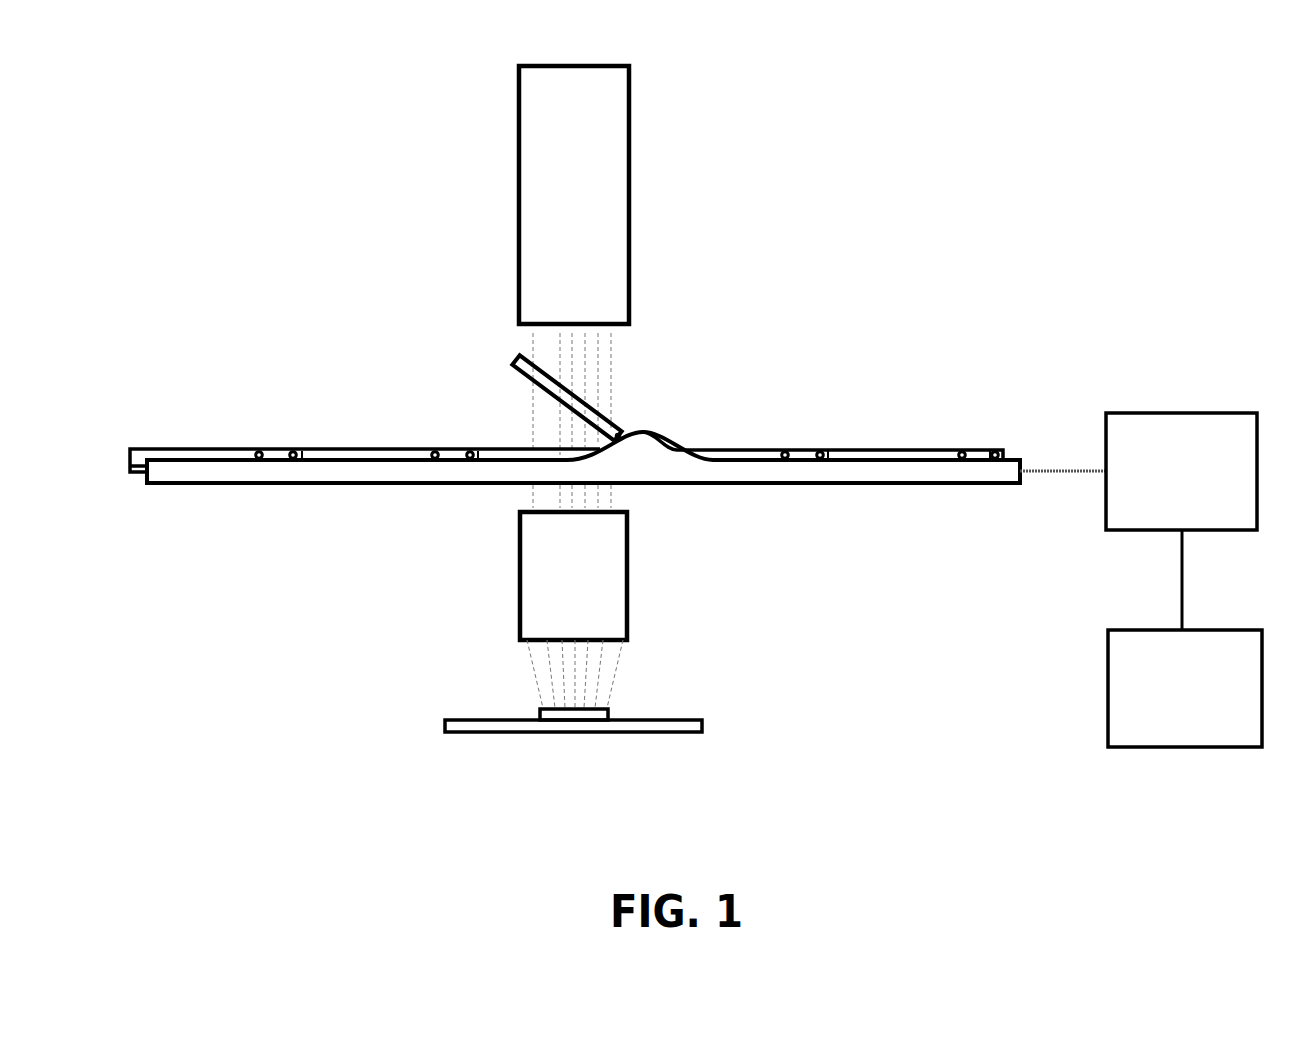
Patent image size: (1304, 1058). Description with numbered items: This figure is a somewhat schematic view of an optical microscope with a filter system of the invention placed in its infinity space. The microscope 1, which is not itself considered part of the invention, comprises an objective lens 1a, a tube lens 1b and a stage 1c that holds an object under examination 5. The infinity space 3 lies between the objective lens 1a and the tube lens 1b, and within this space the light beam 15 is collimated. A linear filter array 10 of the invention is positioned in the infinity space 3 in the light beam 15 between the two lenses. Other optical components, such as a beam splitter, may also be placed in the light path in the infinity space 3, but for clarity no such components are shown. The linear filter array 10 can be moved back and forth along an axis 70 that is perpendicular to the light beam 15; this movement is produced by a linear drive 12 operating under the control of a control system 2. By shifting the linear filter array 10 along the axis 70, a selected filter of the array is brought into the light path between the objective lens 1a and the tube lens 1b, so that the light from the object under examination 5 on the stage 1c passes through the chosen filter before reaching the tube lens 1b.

The microscope 1 is at (897, 166).
The objective lens 1a is at (605, 594).
The tube lens 1b is at (597, 185).
The stage 1c is at (694, 735).
The control system 2 is at (1185, 638).
The infinity space 3 is at (120, 375).
The object under examination 5 is at (611, 714).
The linear filter array 10 is at (977, 470).
The linear drive 12 is at (1138, 471).
The light beam 15 is at (624, 364).
The axis 70 is at (1010, 518).